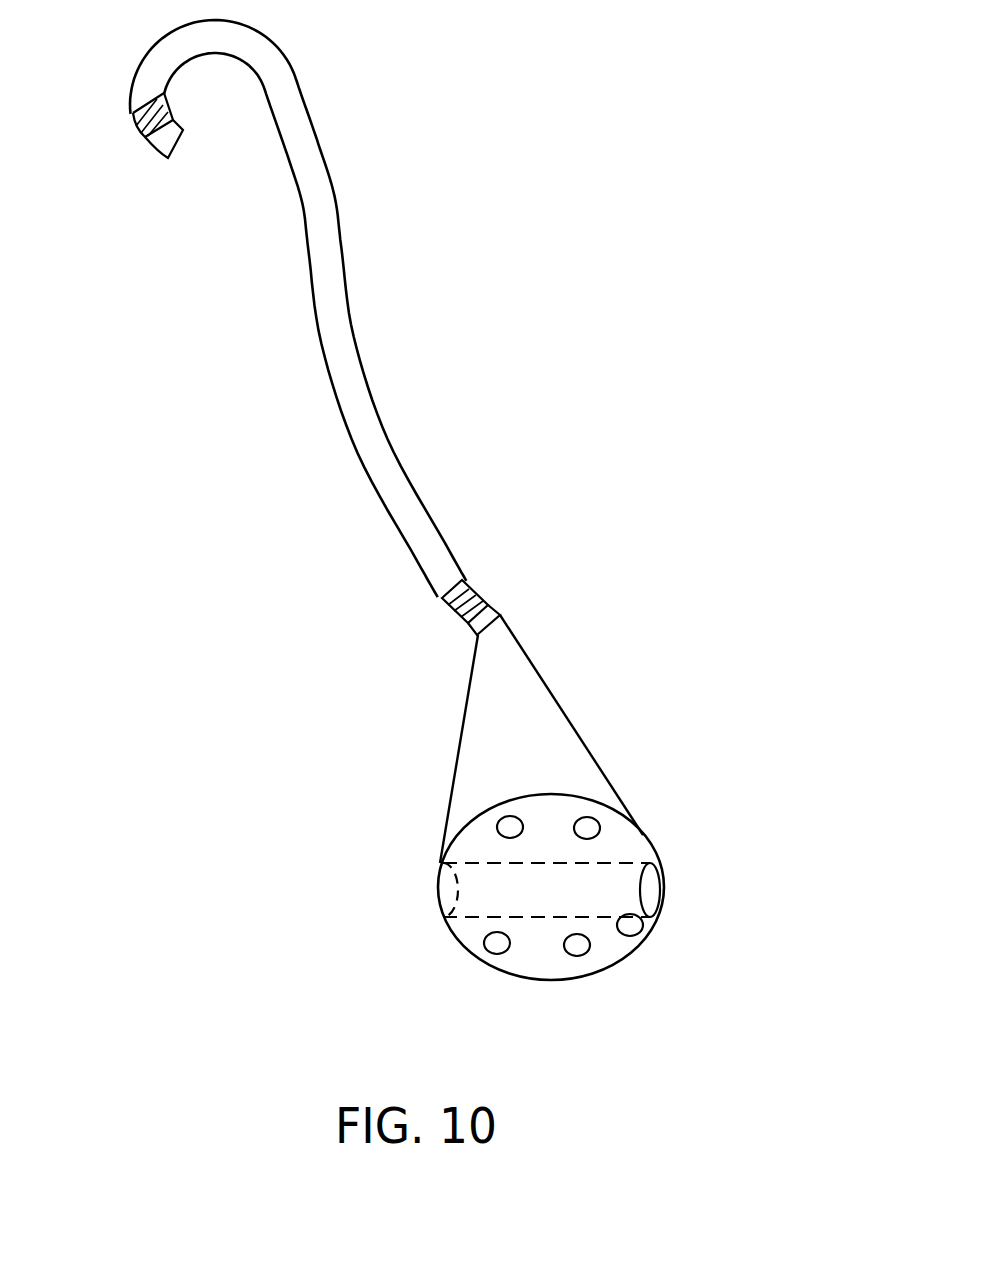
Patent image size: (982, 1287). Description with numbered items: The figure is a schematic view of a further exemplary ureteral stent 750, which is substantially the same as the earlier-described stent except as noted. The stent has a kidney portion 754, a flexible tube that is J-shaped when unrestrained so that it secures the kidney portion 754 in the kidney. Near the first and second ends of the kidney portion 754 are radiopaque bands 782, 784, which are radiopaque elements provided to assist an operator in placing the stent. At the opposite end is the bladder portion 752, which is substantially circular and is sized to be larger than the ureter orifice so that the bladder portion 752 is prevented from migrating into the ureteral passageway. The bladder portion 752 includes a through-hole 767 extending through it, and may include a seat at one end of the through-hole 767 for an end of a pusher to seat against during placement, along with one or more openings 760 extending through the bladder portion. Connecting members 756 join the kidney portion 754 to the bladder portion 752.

The ureteral stent 750 is at (580, 216).
The kidney portion 754 is at (286, 337).
The radiopaque band 782 is at (143, 131).
The radiopaque band 784 is at (475, 593).
The tethers 756 is at (462, 733).
The bladder portion 752 is at (692, 906).
The through-hole 767 is at (585, 892).
The openings 760 is at (633, 935).